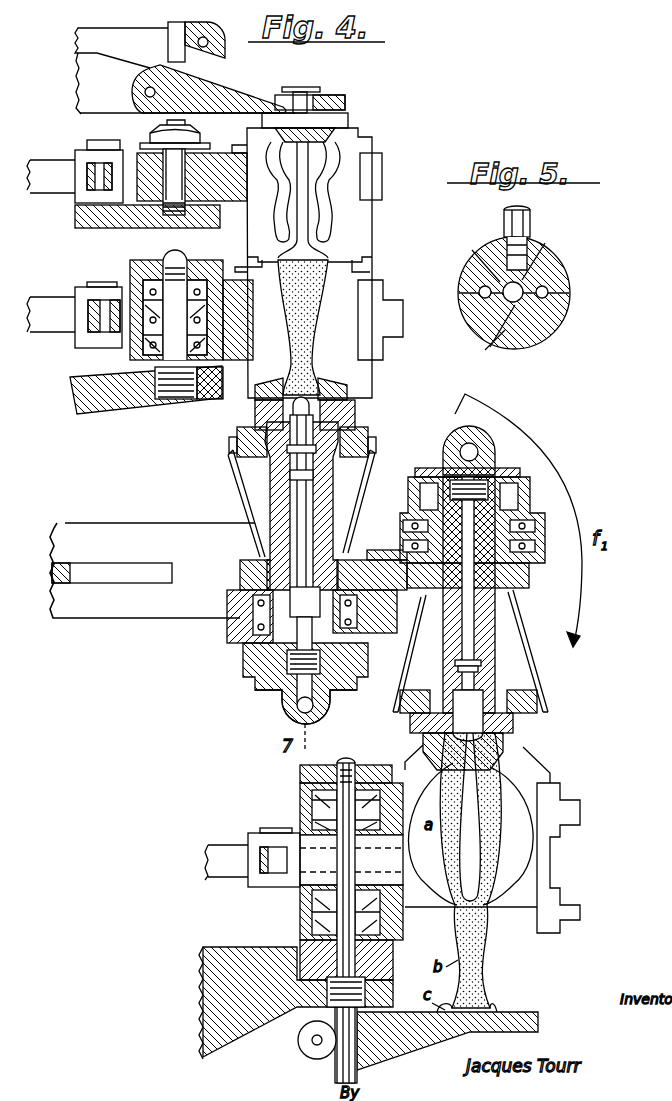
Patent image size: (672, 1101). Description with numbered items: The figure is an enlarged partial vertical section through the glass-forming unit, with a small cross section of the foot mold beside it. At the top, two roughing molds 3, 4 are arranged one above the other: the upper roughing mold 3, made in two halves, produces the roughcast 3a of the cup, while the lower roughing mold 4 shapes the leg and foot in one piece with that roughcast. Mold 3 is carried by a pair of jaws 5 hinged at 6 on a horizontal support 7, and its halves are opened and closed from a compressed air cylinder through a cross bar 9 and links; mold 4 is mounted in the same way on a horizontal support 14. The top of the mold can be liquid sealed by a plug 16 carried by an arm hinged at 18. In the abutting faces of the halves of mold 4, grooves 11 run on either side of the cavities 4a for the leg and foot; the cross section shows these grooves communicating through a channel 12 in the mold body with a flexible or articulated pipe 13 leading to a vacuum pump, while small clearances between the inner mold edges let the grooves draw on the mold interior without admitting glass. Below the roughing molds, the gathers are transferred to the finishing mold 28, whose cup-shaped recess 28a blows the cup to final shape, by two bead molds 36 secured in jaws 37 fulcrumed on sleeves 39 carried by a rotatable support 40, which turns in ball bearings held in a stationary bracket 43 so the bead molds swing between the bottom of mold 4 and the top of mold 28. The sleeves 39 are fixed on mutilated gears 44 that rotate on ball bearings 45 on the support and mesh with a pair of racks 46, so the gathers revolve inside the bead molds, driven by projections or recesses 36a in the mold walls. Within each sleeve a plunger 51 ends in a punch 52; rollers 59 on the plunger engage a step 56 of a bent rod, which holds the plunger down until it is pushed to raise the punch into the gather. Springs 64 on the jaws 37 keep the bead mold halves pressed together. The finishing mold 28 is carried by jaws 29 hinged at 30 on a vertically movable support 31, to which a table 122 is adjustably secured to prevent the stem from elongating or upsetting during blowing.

In FIG. 4, the roughing mold 3 is at (358, 383).
In FIG. 4, the roughcast of the cup 3a is at (300, 366).
In FIG. 4, the roughing mold 4 is at (358, 258).
In FIG. 4, the cavities 4a is at (309, 208).
In FIG. 5, the cavities 4a is at (486, 348).
In FIG. 4, the jaws 5 is at (408, 328).
In FIG. 4, the hinge 6 is at (191, 305).
In FIG. 4, the horizontal support 7 is at (260, 247).
In FIG. 4, the cross bar 9 is at (78, 305).
In FIG. 4, the grooves 11 is at (278, 228).
In FIG. 5, the grooves 11 is at (490, 296).
In FIG. 5, the channel 12 is at (478, 280).
In FIG. 5, the flexible or articulated pipe 13 is at (532, 225).
In FIG. 4, the horizontal support 14 is at (108, 226).
In FIG. 4, the plug 16 is at (322, 130).
In FIG. 4, the hinge 18 is at (145, 93).
In FIG. 4, the finishing mold 28 is at (518, 905).
In FIG. 4, the cup-shaped recess 28a is at (518, 822).
In FIG. 4, the jaws 29 is at (562, 930).
In FIG. 4, the hinge pin 30 is at (345, 804).
In FIG. 4, the support/bracket 31 is at (252, 950).
In FIG. 4, the bead molds 36 is at (352, 410).
In FIG. 4, the projections or recesses 36a is at (445, 737).
In FIG. 4, the jaws 37 is at (250, 435).
In FIG. 4, the sleeves 39 is at (272, 490).
In FIG. 4, the support 40 is at (240, 600).
In FIG. 4, the bracket 43 is at (118, 613).
In FIG. 4, the mutilated gears 44 is at (253, 578).
In FIG. 4, the ball bearings 45 is at (235, 640).
In FIG. 4, the racks 46 is at (372, 548).
In FIG. 4, the plunger 51 is at (300, 490).
In FIG. 4, the punch 52 is at (366, 432).
In FIG. 4, the step 56 is at (300, 522).
In FIG. 4, the rollers 59 is at (300, 556).
In FIG. 4, the springs 64 is at (230, 468).
In FIG. 4, the table 122 is at (483, 1032).